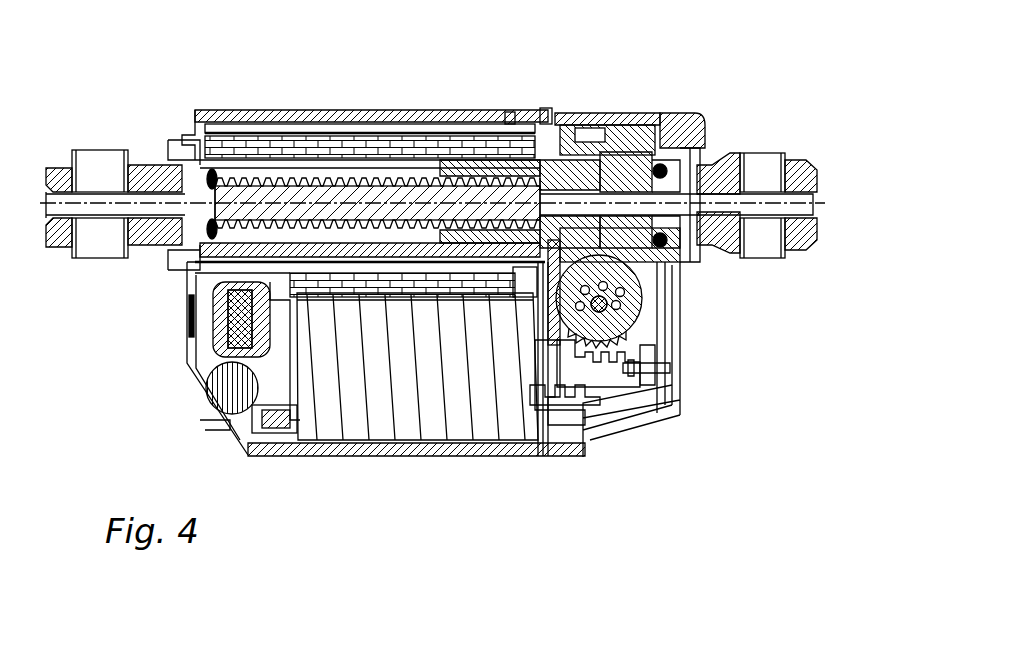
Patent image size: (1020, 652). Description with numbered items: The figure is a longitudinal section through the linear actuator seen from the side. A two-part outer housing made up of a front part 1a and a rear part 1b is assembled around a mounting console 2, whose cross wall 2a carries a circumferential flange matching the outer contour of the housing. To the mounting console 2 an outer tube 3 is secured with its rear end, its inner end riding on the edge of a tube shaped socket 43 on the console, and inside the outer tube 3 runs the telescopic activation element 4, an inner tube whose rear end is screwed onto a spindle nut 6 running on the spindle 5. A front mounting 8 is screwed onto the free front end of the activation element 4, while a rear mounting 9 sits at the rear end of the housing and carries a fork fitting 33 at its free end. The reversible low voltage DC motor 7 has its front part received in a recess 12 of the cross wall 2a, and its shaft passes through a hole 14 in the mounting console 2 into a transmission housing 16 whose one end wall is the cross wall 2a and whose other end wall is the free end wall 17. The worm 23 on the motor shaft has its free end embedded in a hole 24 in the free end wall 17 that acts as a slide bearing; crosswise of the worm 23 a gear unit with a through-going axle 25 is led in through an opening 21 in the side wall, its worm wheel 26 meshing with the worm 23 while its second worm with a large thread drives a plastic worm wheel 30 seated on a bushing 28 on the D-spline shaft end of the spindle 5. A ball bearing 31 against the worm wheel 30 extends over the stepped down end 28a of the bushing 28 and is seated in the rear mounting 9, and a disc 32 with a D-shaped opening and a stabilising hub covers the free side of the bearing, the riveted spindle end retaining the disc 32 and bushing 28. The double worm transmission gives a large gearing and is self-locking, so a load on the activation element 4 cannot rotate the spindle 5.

The front part 1a is at (228, 435).
The rear part 1b is at (670, 417).
The mounting console 2 is at (538, 458).
The cross wall 2a is at (543, 410).
The outer tube 3 is at (356, 150).
The activation element 4 is at (314, 160).
The spindle 5 is at (240, 198).
The spindle nut 6 is at (460, 160).
The motor 7 is at (383, 423).
The front mounting 8 is at (68, 153).
The rear mounting 9 is at (780, 265).
The recess 12 is at (545, 415).
The hole 14 is at (550, 393).
The housing 16 is at (645, 338).
The free end wall 17 is at (660, 350).
The opening 21 is at (545, 165).
The worm 23 is at (598, 370).
The hole 24 is at (650, 383).
The axle 25 is at (612, 305).
The worm wheel 26 is at (552, 318).
The bushing 28 is at (575, 150).
The stepped down end 28a is at (632, 165).
The worm wheel 30 is at (600, 170).
The ball bearing 31 is at (692, 140).
The disc 32 is at (715, 158).
The fork fitting 33 is at (803, 240).
The tube shaped socket 43 is at (510, 140).